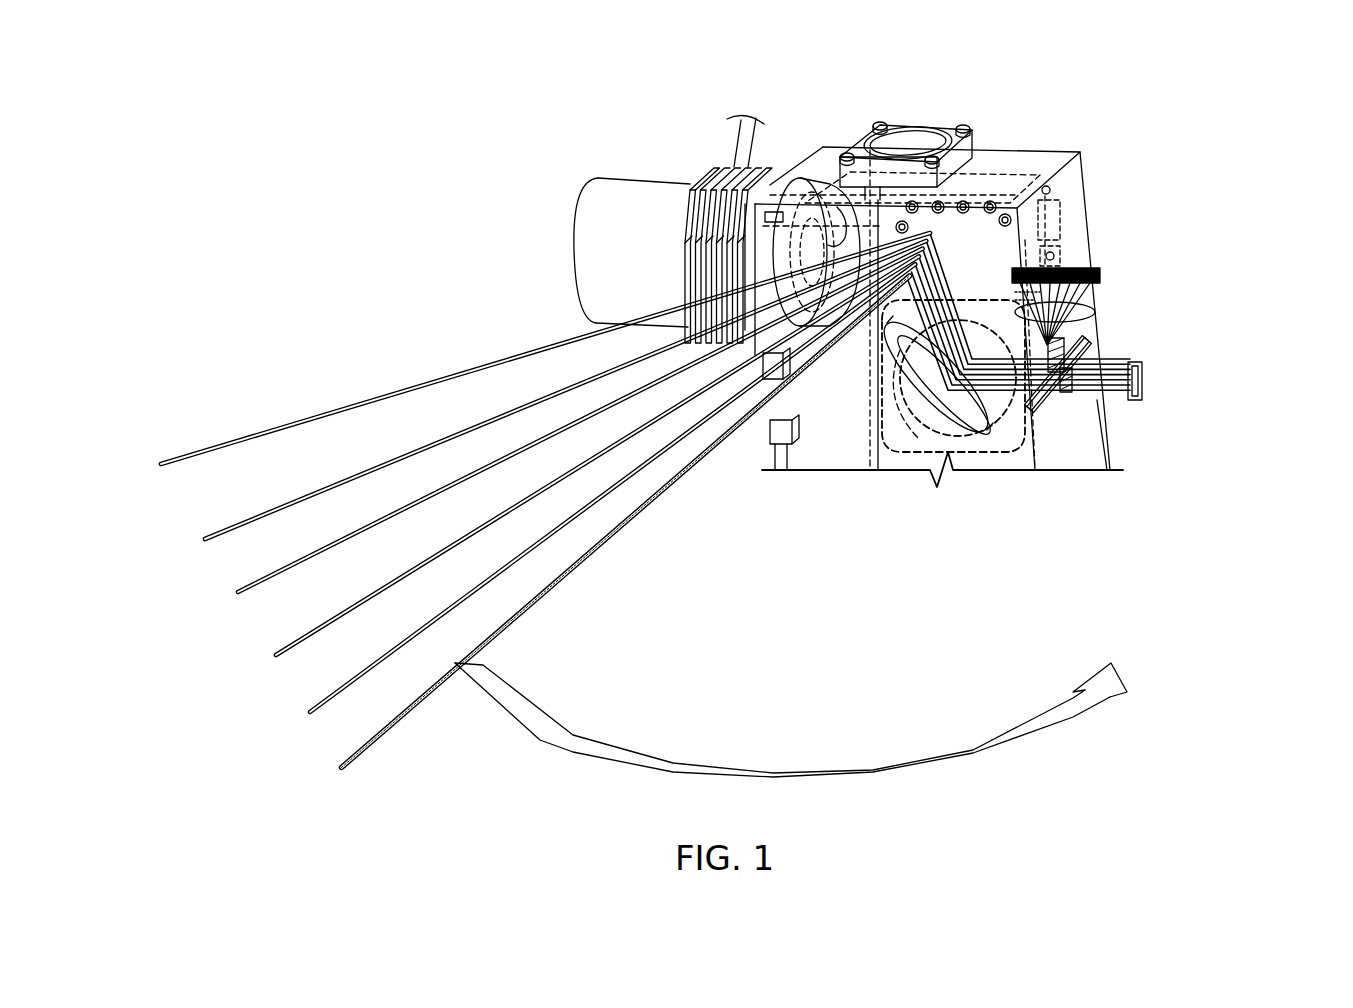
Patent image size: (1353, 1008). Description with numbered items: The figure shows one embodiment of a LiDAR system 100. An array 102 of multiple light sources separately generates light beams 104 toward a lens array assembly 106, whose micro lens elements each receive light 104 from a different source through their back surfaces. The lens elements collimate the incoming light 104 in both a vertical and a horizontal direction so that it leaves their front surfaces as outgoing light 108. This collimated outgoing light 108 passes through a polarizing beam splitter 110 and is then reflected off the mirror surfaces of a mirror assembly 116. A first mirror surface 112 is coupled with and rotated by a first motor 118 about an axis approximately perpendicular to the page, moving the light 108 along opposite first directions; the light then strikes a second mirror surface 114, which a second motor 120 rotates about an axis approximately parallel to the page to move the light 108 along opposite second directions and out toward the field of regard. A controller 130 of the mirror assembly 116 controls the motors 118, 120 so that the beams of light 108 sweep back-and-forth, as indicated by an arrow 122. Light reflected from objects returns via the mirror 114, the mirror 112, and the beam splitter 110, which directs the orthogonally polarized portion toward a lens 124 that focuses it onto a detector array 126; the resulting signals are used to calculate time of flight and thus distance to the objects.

The LiDAR system 100 is at (1233, 125).
The array of light sources 102 is at (1143, 380).
The light beams 104 is at (1124, 358).
The lens array assembly 106 is at (1098, 400).
The outgoing light 108 is at (1097, 410).
The polarizing beam splitter 110 is at (1027, 420).
The first mirror surface 112 is at (912, 372).
The second mirror surface 114 is at (1040, 226).
The mirror assembly 116 is at (987, 108).
The first motor 118 is at (968, 462).
The second motor 120 is at (786, 215).
The arrow 122 is at (560, 738).
The lens 124 is at (1085, 312).
The detector array 126 is at (1100, 268).
The controller 130 is at (985, 172).